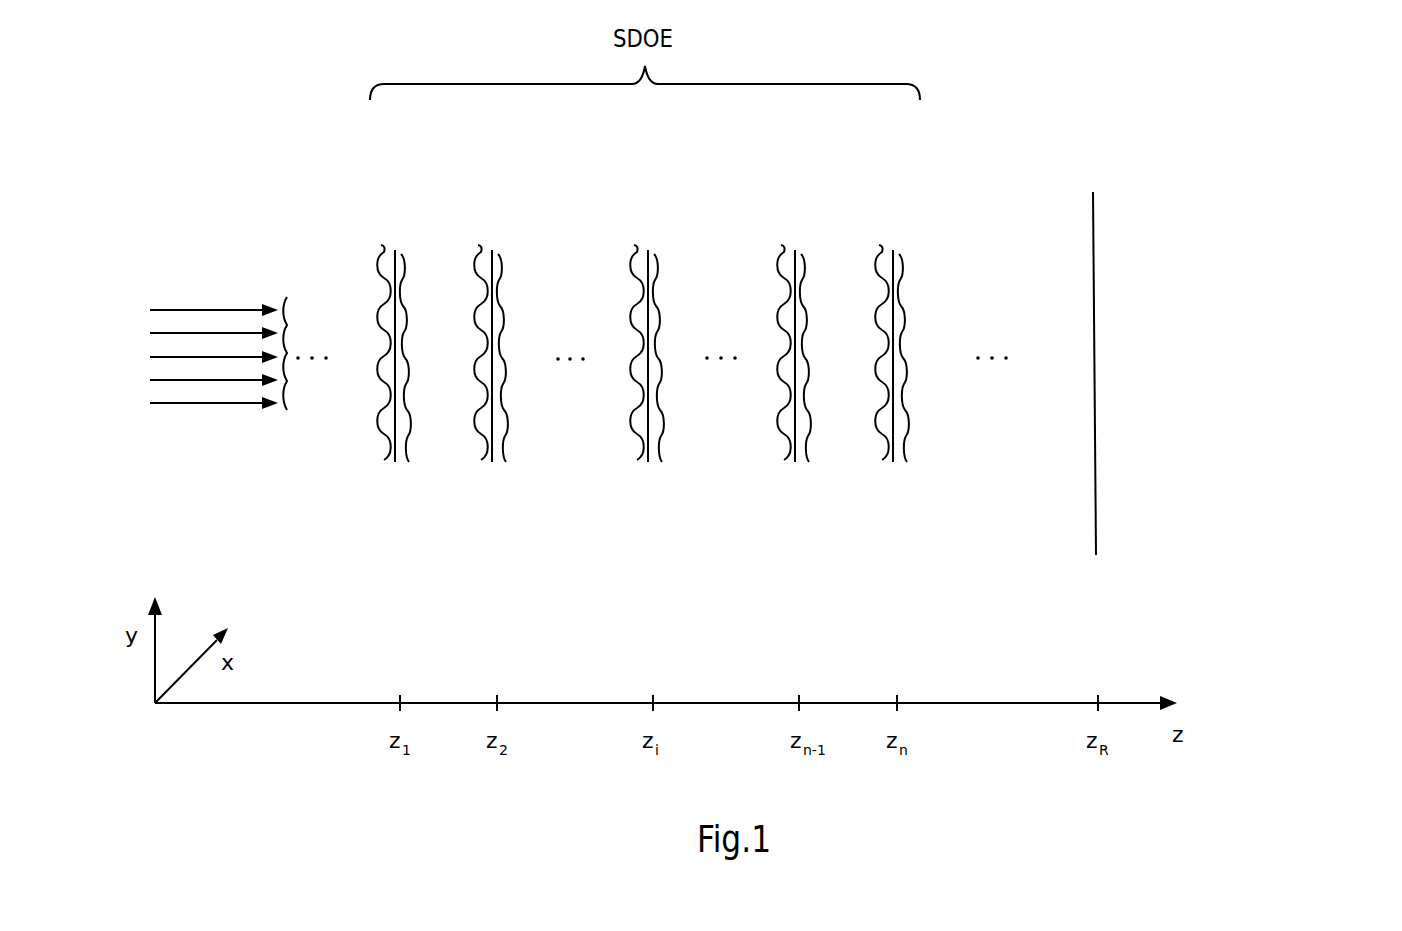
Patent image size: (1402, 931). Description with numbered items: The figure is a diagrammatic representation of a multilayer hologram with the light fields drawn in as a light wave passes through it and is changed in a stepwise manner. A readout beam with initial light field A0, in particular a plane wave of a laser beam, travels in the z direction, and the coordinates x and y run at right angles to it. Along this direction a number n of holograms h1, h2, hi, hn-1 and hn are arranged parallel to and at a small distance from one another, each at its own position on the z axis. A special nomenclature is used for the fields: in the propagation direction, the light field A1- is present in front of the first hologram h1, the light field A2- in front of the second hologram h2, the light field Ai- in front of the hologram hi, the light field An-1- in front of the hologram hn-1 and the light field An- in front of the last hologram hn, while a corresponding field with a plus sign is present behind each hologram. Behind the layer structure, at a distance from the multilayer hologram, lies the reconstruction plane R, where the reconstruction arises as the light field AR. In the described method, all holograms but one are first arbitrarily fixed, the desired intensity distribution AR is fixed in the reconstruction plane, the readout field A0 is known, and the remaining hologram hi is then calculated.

The initial light field A0 is at (186, 321).
The first hologram h1 is at (398, 245).
The second hologram h2 is at (495, 245).
The i-th hologram hi is at (651, 245).
The (n-1)-th hologram hn-1 is at (797, 245).
The n-th hologram hn is at (896, 245).
The light field in front of first hologram A1- is at (381, 470).
The light field in front of second hologram A2- is at (470, 470).
The light field in front of i-th hologram Ai- is at (634, 470).
The light field in front of (n-1)-th hologram An-1- is at (773, 470).
The light field in front of n-th hologram An- is at (879, 470).
The light field in reconstruction plane AR is at (1094, 190).